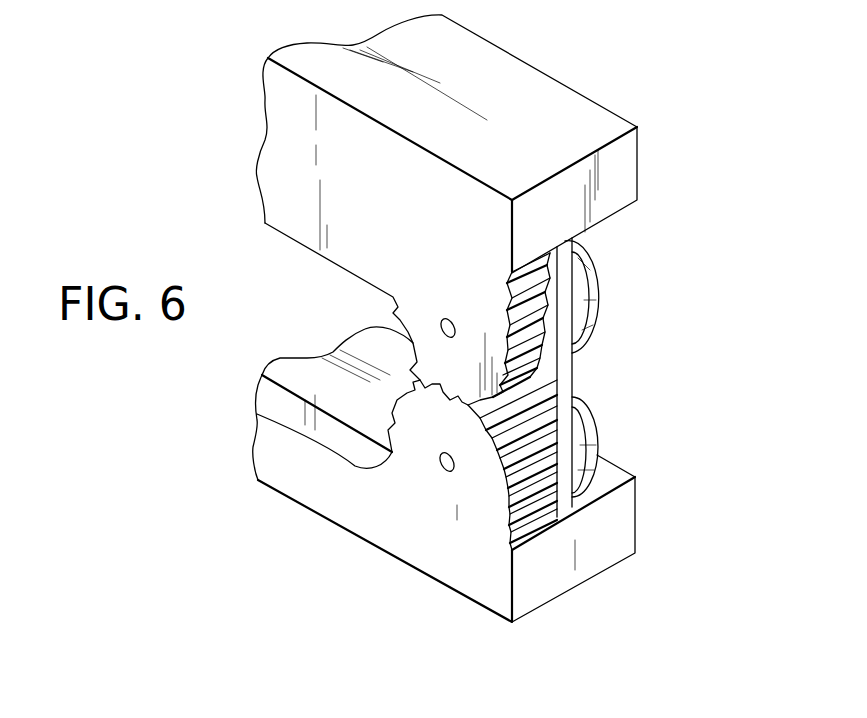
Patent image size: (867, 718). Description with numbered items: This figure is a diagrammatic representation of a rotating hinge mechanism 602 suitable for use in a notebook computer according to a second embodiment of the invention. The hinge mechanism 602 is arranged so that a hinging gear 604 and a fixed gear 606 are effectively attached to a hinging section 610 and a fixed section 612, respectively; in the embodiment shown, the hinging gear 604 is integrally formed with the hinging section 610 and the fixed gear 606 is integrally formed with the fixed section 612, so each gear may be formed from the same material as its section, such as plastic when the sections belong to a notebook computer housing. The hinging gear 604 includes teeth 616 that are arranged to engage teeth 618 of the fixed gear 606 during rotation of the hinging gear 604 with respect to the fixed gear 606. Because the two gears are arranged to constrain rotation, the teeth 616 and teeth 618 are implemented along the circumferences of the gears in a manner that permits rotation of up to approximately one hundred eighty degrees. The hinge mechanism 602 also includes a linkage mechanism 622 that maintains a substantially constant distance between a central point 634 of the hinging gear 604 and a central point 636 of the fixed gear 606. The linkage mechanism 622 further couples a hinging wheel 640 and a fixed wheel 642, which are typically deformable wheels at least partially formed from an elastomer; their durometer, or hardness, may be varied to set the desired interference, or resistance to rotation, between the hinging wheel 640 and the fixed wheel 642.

The hinge mechanism 602 is at (494, 318).
The hinging gear 604 is at (488, 210).
The fixed gear 606 is at (450, 474).
The hinging section 610 is at (616, 200).
The fixed section 612 is at (616, 538).
The teeth 616 is at (300, 397).
The teeth 618 is at (286, 435).
The linkage mechanism 622 is at (626, 425).
The central point 634 is at (404, 285).
The central point 636 is at (372, 507).
The hinging wheel 640 is at (625, 297).
The fixed wheel 642 is at (628, 447).